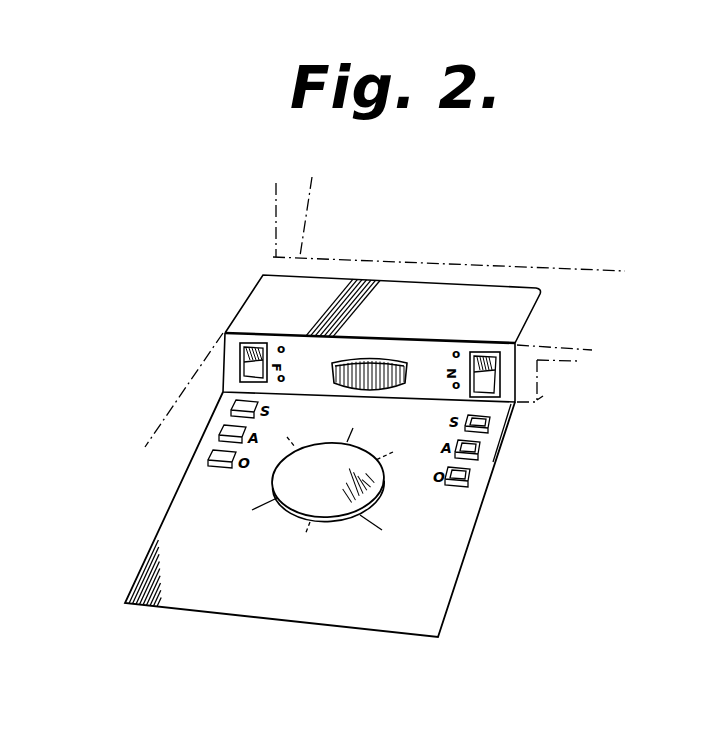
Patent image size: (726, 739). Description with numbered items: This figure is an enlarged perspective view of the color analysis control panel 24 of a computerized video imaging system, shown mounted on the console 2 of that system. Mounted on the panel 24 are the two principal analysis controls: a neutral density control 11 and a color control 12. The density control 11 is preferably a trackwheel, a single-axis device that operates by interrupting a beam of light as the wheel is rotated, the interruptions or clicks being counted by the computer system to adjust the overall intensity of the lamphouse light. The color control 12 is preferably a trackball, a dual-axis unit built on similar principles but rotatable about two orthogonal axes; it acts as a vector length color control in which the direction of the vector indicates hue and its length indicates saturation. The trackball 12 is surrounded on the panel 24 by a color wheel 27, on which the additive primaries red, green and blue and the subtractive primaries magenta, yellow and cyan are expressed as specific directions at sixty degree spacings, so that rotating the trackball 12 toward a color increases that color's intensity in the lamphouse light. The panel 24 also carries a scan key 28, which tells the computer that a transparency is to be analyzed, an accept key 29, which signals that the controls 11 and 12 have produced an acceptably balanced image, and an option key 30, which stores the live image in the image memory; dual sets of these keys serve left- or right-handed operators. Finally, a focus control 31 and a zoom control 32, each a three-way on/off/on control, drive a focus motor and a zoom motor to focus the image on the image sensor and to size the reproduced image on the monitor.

The console 2 is at (434, 262).
The neutral density control 11 is at (373, 364).
The color control 12 is at (376, 478).
The color analysis control panel 24 is at (462, 578).
The color wheel 27 is at (272, 524).
The scan key 28 is at (485, 422).
The accept key 29 is at (478, 447).
The option key 30 is at (472, 476).
The focus control 31 is at (246, 350).
The zoom control 32 is at (483, 357).